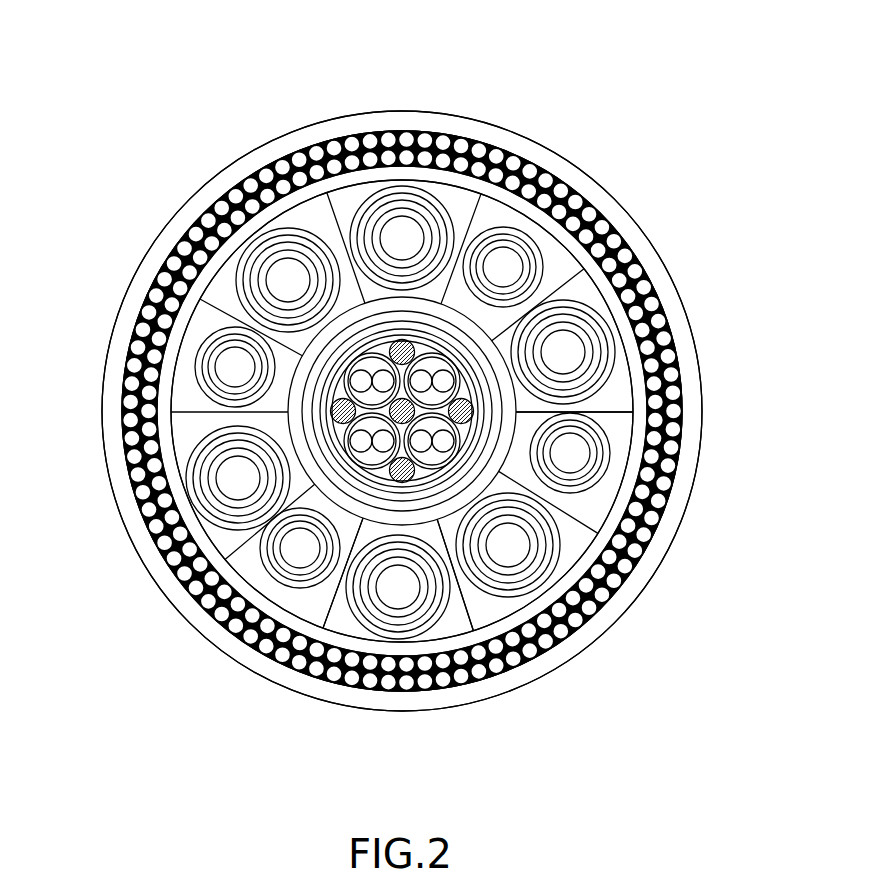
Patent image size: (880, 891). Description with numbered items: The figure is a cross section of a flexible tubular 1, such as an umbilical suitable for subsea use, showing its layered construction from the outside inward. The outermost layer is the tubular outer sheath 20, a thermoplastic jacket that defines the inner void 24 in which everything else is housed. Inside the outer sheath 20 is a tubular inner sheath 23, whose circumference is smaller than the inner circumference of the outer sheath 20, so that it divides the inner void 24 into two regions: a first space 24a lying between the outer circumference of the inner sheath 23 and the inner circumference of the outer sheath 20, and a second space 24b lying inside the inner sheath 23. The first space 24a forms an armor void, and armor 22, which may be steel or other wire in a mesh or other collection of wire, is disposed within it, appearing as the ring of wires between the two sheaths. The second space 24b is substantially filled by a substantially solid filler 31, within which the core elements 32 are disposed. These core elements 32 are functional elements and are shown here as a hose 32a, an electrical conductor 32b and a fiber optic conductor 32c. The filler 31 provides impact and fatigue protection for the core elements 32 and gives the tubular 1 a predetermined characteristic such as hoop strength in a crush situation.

The tubular 1 is at (200, 78).
The tubular outer sheath 20 is at (103, 372).
The armor 22 is at (667, 500).
The tubular inner sheath 23 is at (193, 258).
The inner void 24 is at (186, 416).
The first space 24a is at (630, 240).
The second space 24b is at (613, 407).
The filler 31 is at (313, 615).
The core elements 32 is at (253, 562).
The hose 32a is at (398, 600).
The electrical conductor 32b is at (512, 262).
The fiber optic conductor 32c is at (401, 223).